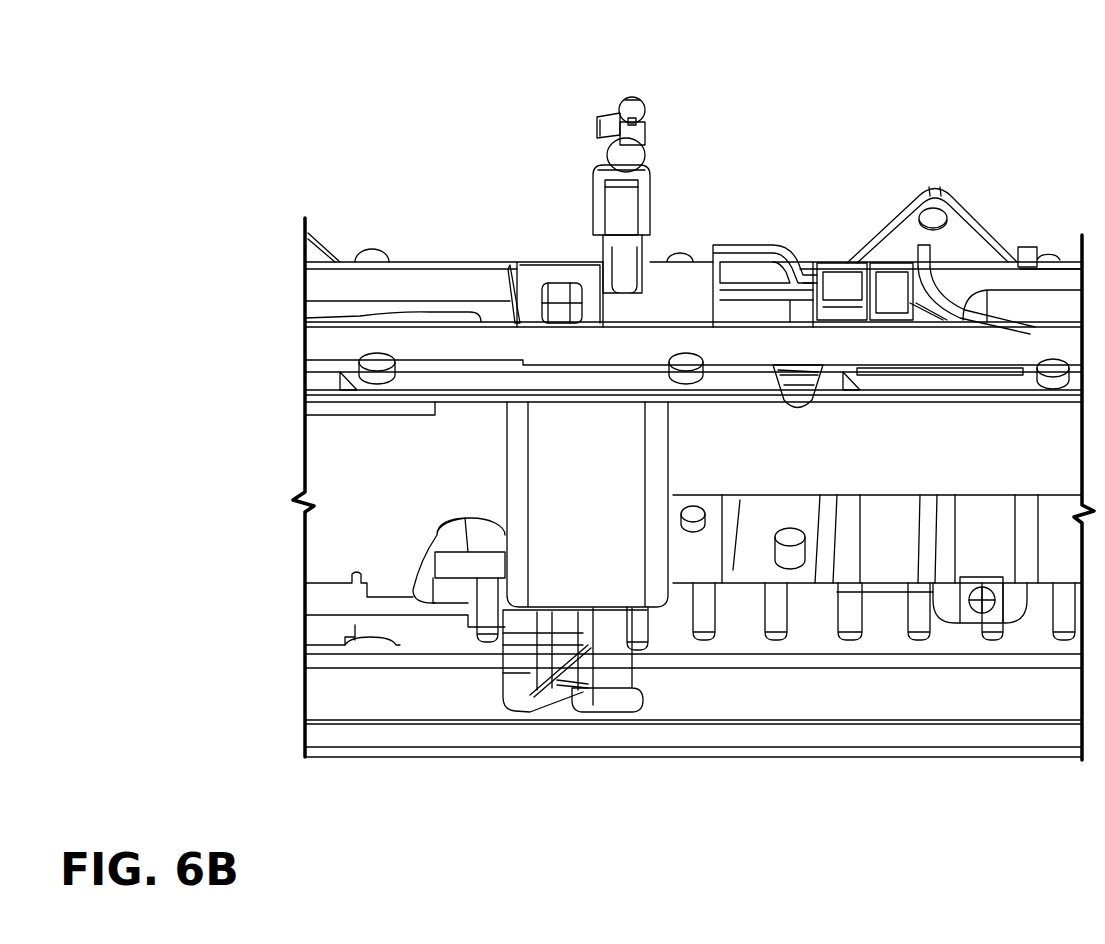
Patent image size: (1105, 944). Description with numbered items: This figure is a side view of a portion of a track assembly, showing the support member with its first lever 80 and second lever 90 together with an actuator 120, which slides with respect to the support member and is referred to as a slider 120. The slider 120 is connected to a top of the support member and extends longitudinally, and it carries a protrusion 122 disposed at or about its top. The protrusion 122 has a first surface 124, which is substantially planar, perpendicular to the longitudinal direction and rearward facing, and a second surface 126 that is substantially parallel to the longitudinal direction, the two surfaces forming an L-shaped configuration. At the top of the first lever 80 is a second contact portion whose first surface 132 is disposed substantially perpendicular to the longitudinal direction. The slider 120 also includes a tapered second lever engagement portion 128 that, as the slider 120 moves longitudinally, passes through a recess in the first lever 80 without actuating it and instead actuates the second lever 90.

The first lever 80 is at (660, 137).
The second lever 90 is at (557, 283).
The actuator 120 is at (994, 208).
The protrusion 122 is at (760, 233).
The first surface 124 is at (694, 258).
The second surface 126 is at (773, 298).
The second lever engagement portion 128 is at (658, 297).
The first surface 132 is at (670, 258).